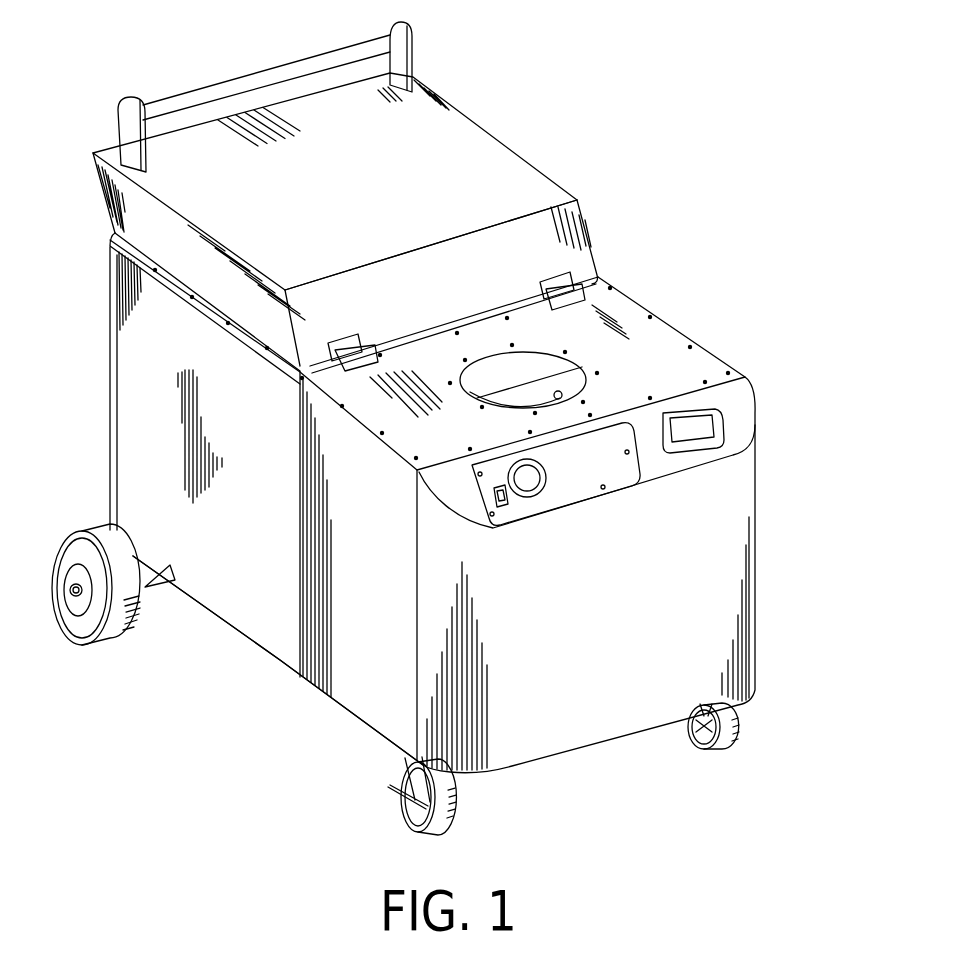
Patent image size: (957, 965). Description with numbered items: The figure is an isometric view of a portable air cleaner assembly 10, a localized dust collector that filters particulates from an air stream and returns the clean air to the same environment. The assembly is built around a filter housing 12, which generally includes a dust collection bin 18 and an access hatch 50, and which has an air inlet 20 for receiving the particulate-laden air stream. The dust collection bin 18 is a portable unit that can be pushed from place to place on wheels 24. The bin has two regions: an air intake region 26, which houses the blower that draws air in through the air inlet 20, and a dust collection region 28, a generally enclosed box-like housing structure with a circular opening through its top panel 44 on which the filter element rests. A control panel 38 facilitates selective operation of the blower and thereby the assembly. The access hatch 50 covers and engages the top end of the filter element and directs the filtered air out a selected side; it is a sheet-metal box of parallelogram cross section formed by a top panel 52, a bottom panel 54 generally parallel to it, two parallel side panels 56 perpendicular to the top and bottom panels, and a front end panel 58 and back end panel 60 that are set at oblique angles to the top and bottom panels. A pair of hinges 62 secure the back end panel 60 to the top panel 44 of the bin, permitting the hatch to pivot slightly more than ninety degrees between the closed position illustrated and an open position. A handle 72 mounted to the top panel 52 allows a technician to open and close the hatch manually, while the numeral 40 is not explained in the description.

The air cleaner assembly 10 is at (692, 286).
The filter housing 12 is at (125, 396).
The dust collection bin 18 is at (360, 702).
The air inlet 20 is at (567, 383).
The wheels 24 is at (92, 525).
The air intake region 26 is at (540, 648).
The dust collection region 28 is at (256, 538).
The control panel 38 is at (625, 473).
The axle bracket 40 is at (192, 568).
The top panel 44 is at (653, 343).
The access hatch 50 is at (307, 108).
The top panel 52 is at (350, 193).
The bottom panel 54 is at (598, 284).
The side panels 56 is at (152, 254).
The front end panel 58 is at (177, 128).
The back end panel 60 is at (444, 297).
The hinges 62 is at (570, 276).
The handle 72 is at (233, 80).